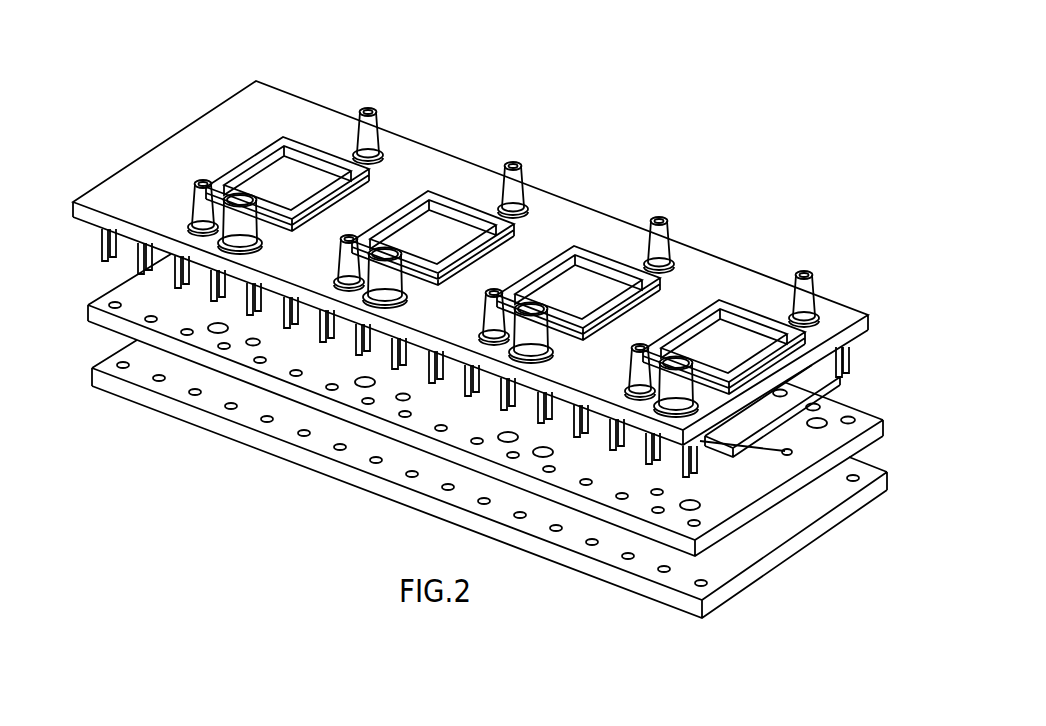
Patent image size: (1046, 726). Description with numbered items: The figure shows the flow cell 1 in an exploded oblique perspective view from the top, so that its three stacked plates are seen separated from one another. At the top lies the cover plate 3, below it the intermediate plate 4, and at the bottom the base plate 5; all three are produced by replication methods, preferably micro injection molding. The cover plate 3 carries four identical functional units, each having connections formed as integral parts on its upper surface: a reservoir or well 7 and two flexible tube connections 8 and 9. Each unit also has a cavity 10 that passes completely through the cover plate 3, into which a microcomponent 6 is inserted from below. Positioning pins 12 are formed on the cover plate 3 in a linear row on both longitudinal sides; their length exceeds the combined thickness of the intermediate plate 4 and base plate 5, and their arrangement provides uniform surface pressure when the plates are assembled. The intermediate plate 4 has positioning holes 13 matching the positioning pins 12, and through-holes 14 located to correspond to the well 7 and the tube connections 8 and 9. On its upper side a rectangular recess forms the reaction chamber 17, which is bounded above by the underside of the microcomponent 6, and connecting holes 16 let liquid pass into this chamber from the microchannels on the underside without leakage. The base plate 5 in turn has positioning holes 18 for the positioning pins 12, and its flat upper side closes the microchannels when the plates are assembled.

The connector assembly 1 is at (559, 142).
The cover plate 3 is at (557, 217).
The intermediate plate 4 is at (303, 398).
The base plate 5 is at (192, 415).
The microcomponent 6 is at (780, 403).
The well 7 is at (143, 238).
The flexible tube connection 8 is at (193, 203).
The flexible tube connection 9 is at (800, 293).
The cavity 10 is at (450, 200).
The positioning pins 12 is at (853, 358).
The positioning holes 13 is at (150, 318).
The through-holes 14 is at (650, 490).
The connecting holes 16 is at (785, 450).
The reaction chamber 17 is at (737, 467).
The positioning holes 18 is at (157, 379).